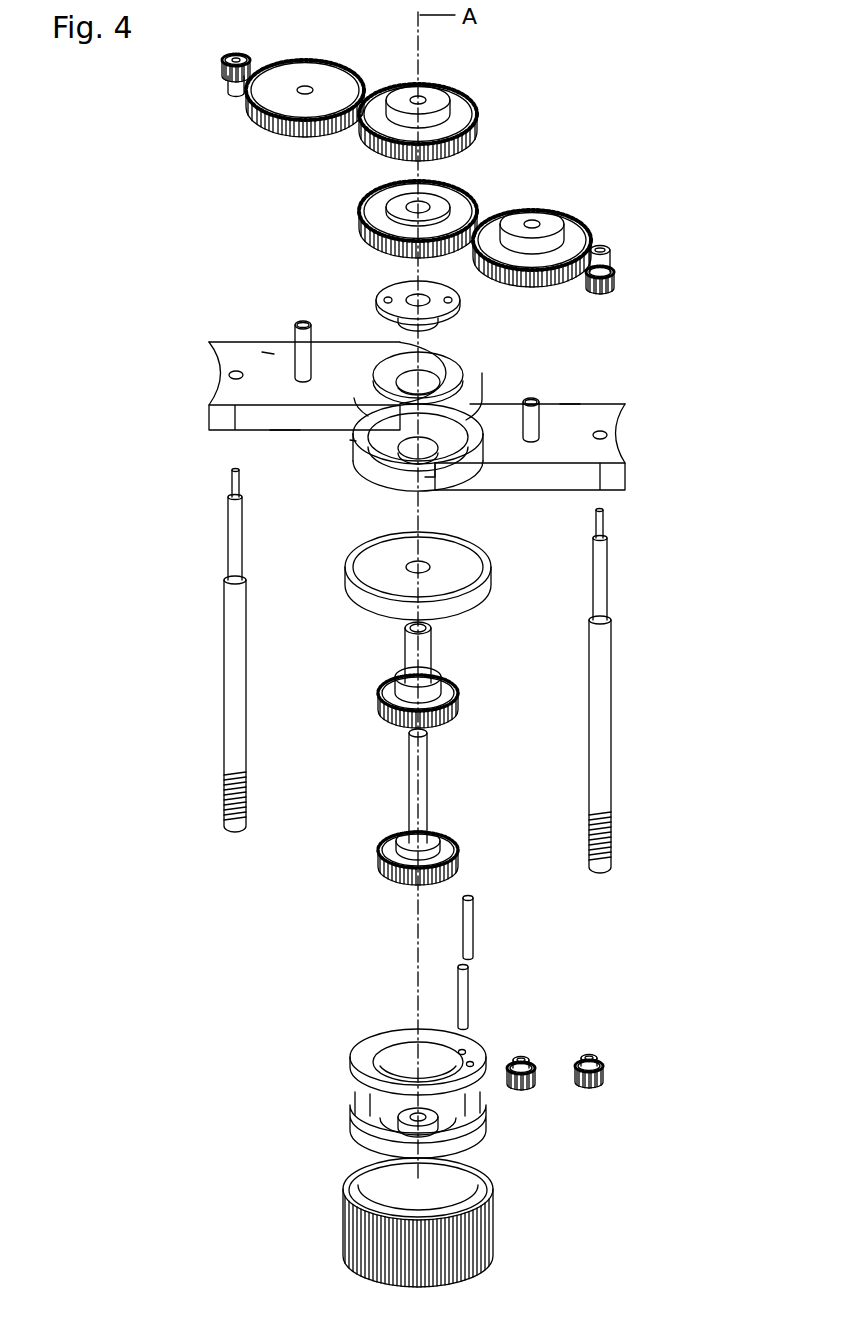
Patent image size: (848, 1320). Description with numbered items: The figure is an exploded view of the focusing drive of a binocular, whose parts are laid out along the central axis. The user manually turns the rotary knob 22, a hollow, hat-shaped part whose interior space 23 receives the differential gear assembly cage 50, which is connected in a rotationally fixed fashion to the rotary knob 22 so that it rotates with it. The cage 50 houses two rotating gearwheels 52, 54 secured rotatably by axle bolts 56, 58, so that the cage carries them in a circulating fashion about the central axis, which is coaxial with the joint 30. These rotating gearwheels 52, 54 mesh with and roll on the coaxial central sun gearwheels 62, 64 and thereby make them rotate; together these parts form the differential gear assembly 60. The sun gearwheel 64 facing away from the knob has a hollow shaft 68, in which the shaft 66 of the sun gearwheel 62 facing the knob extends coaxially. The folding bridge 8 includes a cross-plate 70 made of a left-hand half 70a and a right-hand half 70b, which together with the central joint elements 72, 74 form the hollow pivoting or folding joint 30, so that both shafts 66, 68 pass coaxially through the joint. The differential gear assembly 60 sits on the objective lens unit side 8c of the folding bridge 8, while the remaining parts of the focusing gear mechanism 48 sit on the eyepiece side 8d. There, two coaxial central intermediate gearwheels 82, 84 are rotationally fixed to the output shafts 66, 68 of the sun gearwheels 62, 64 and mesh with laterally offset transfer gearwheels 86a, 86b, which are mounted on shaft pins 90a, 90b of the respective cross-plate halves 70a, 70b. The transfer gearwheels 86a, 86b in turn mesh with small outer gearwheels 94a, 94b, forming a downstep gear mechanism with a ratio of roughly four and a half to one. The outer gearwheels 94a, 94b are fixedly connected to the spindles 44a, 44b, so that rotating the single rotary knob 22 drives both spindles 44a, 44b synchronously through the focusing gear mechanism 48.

The folding bridge 8 is at (584, 328).
The objective lens unit side 8c is at (280, 430).
The eyepiece side 8d is at (268, 356).
The rotary knob 22 is at (495, 1226).
The interior space 23 is at (458, 1190).
The joint 30 is at (347, 441).
The spindle 44a is at (224, 760).
The spindle 44b is at (612, 793).
The focusing gear mechanism 48 is at (608, 125).
The differential gear assembly cage 50 is at (490, 1125).
The rotating gearwheel 52 is at (524, 1062).
The rotating gearwheel 54 is at (596, 1060).
The axle bolt 56 is at (469, 990).
The axle bolt 58 is at (474, 922).
The differential gear assembly 60 is at (326, 1097).
The sun gearwheel 62 is at (459, 855).
The sun gearwheel 64 is at (458, 700).
The shaft 66 is at (428, 797).
The hollow shaft 68 is at (431, 652).
The cross-plate 70 is at (568, 404).
The left-hand half of cross-plate 70a is at (250, 340).
The right-hand half of cross-plate 70b is at (600, 404).
The central joint element 72 is at (493, 572).
The central joint element 74 is at (460, 302).
The coaxial central intermediate gearwheel 82 is at (462, 98).
The coaxial central intermediate gearwheel 84 is at (460, 190).
The laterally offset transfer gearwheel 86a is at (304, 60).
The laterally offset transfer gearwheel 86b is at (572, 215).
The shaft pin 90a is at (305, 324).
The shaft pin 90b is at (531, 401).
The small outer gearwheel 94a is at (236, 52).
The small outer gearwheel 94b is at (615, 268).